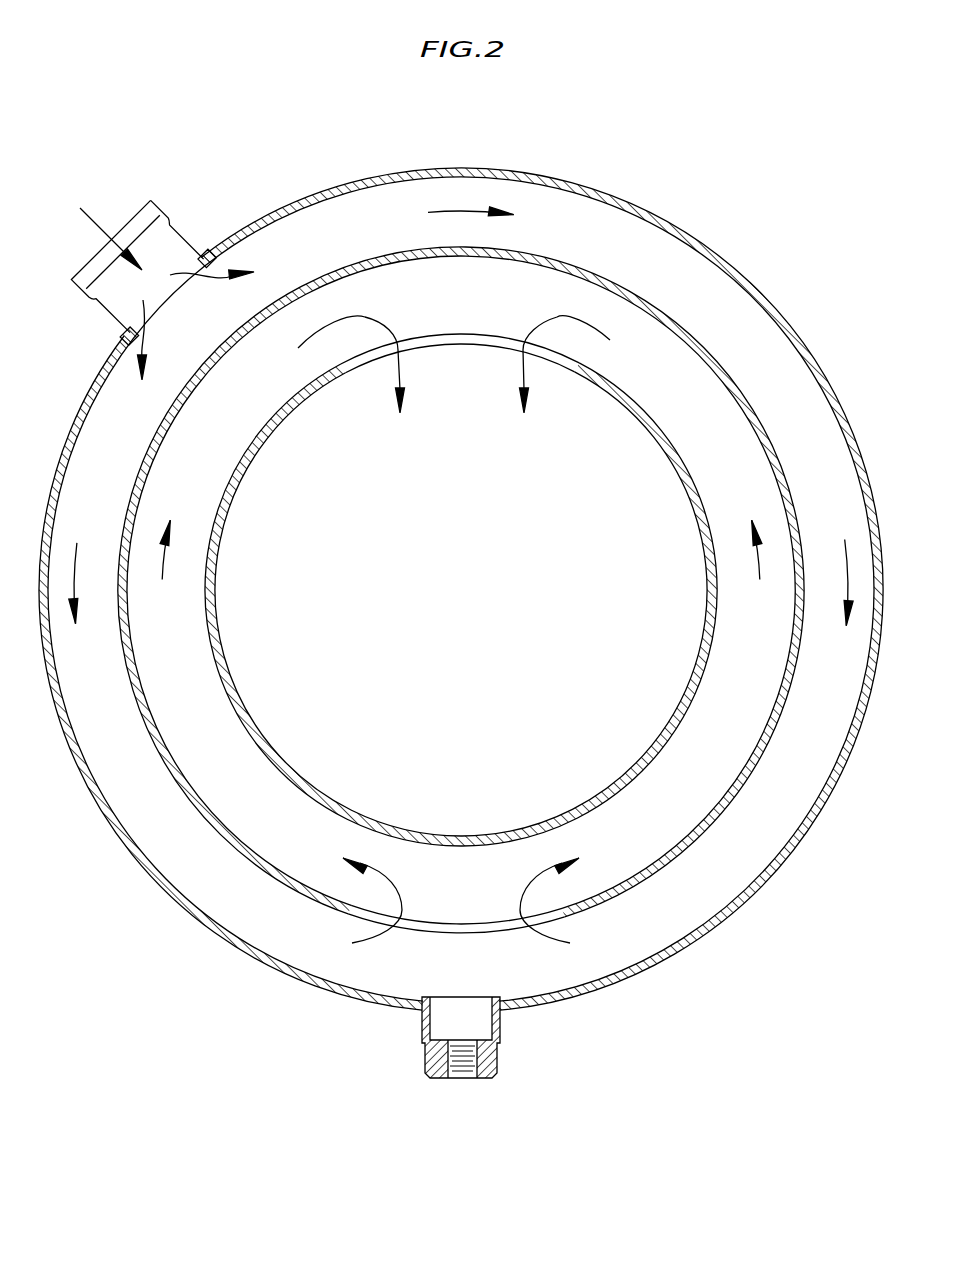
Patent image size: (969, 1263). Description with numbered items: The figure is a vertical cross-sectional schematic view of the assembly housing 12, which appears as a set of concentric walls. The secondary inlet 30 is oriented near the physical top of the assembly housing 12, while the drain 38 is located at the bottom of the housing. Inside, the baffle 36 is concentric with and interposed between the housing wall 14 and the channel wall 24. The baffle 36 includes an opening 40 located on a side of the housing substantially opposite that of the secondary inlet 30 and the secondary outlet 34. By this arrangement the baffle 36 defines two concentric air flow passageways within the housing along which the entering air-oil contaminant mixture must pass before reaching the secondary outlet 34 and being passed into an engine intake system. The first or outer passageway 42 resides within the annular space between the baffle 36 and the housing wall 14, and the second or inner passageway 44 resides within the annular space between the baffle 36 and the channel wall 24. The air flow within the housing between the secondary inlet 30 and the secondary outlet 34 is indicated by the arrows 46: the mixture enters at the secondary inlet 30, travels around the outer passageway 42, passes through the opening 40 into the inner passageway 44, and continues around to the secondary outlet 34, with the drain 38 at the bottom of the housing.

The assembly housing 12 is at (701, 231).
The housing wall 14 is at (705, 932).
The channel wall 24 is at (213, 575).
The secondary inlet 30 is at (132, 215).
The secondary outlet 34 is at (423, 337).
The baffle 36 is at (557, 260).
The drain 38 is at (462, 1080).
The opening 40 is at (572, 925).
The outer passageway 42 is at (738, 318).
The inner passageway 44 is at (190, 465).
The arrows 46 is at (242, 280).